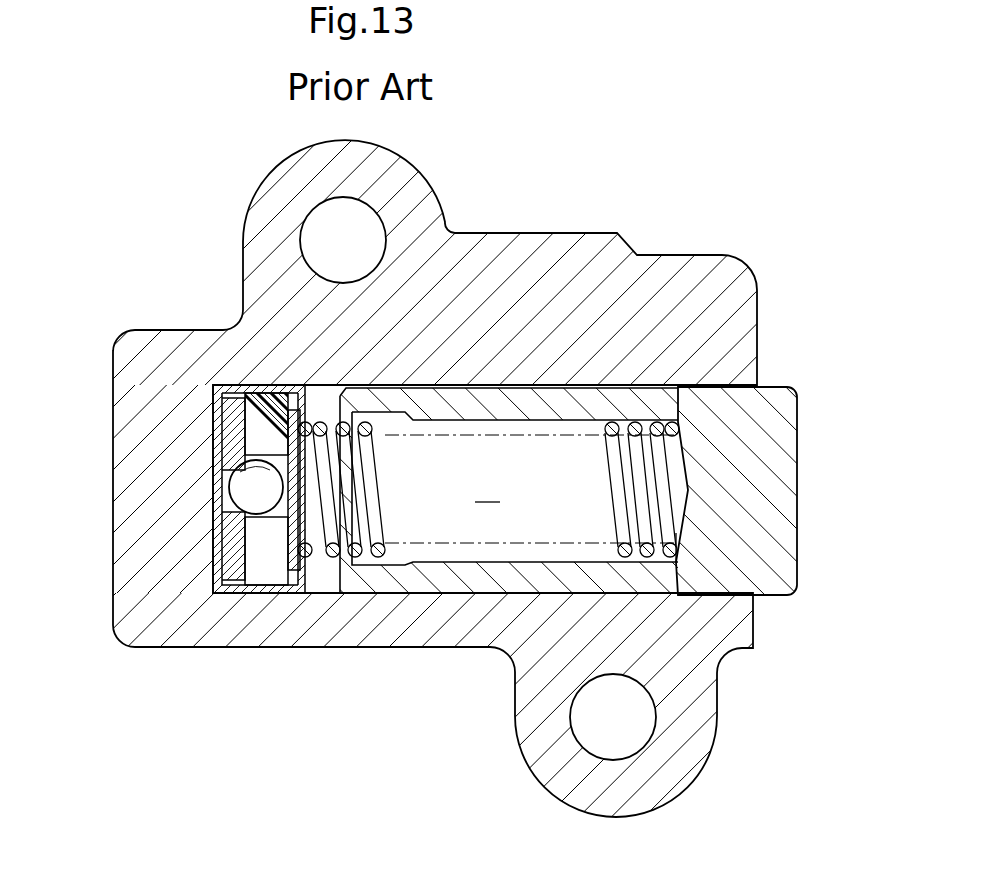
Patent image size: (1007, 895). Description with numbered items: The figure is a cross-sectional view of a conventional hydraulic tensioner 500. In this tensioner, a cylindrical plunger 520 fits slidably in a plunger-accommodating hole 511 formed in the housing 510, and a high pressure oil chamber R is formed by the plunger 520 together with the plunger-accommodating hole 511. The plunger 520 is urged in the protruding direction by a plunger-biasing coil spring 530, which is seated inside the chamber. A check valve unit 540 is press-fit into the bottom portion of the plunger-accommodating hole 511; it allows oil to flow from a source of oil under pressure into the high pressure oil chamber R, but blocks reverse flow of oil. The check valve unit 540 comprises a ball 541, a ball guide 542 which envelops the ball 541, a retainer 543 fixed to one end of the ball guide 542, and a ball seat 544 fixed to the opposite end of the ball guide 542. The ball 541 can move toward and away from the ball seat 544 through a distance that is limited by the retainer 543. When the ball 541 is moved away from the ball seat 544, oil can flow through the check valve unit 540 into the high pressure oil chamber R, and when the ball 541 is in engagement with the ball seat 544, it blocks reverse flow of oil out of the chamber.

The hydraulic tensioner 500 is at (609, 160).
The housing 510 is at (687, 658).
The plunger-accommodating hole 511 is at (340, 593).
The plunger 520 is at (763, 507).
The plunger-biasing coil spring 530 is at (378, 575).
The check valve unit 540 is at (448, 447).
The ball 541 is at (240, 493).
The ball guide 542 is at (265, 557).
The retainer 543 is at (292, 562).
The ball seat 544 is at (302, 697).